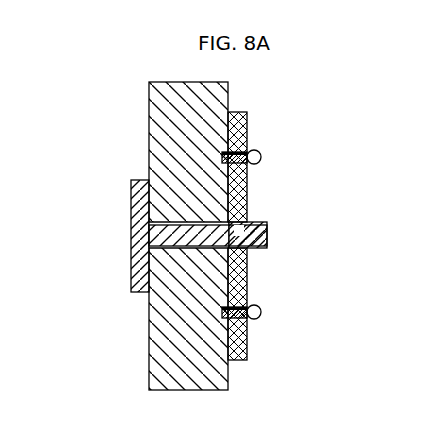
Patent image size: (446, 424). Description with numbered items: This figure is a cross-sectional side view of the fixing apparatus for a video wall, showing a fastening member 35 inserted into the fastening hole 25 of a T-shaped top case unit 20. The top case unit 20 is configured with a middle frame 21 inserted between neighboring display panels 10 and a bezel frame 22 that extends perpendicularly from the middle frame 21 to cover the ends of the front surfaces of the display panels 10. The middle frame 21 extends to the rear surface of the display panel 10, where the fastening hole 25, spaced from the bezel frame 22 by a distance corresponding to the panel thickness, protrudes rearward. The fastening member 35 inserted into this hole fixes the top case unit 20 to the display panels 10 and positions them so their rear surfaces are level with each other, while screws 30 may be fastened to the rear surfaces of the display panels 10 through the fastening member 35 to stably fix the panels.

The display panel 10 is at (156, 104).
The top case unit 20 is at (181, 225).
The middle frame 21 is at (267, 243).
The bezel frame 22 is at (131, 260).
The fastening hole 25 is at (258, 223).
The screw 30 is at (261, 155).
The fastening member 35 is at (247, 113).